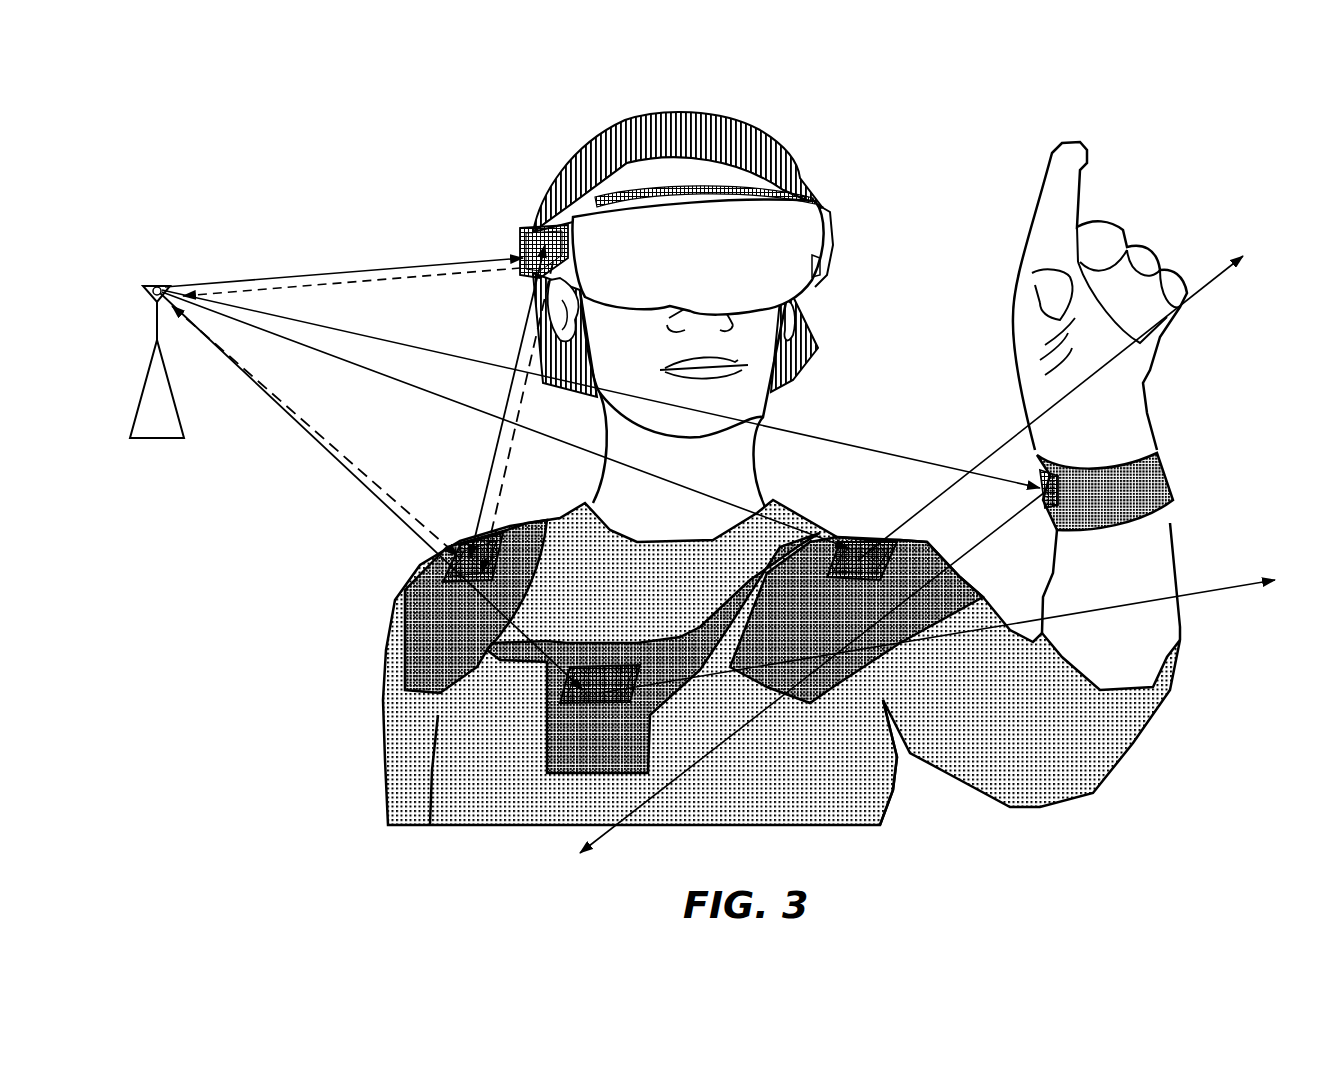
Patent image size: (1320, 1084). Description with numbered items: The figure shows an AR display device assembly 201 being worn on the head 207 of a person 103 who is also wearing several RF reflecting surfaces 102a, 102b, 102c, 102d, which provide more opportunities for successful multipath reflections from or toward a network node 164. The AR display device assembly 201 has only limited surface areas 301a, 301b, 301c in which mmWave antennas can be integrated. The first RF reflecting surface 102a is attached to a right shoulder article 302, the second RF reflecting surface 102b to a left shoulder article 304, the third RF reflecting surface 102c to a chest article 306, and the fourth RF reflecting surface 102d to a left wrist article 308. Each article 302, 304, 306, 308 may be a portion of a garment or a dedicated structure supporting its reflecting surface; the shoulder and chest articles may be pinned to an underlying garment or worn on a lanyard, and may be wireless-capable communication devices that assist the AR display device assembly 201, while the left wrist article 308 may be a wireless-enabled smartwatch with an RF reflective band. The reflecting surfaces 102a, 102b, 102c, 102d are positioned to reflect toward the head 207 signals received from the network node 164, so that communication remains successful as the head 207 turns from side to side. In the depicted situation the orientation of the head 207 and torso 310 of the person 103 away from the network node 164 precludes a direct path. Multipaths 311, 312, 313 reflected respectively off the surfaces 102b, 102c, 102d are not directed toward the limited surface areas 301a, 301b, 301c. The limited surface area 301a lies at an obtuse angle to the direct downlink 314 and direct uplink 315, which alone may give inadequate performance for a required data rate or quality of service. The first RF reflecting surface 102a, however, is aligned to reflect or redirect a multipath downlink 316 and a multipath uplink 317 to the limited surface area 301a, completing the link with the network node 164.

The first RF reflecting surface 102a is at (440, 580).
The second RF reflecting surface 102b is at (853, 540).
The third RF reflecting surface 102c is at (598, 703).
The fourth RF reflecting surface 102d is at (1048, 505).
The person 103 is at (388, 765).
The network node 164 is at (185, 440).
The AR display device assembly 201 is at (852, 222).
The head 207 is at (780, 167).
The limited surface area 301a is at (527, 245).
The limited surface area 301b is at (735, 190).
The limited surface area 301c is at (833, 245).
The right shoulder article 302 is at (445, 640).
The left shoulder article 304 is at (937, 595).
The chest article 306 is at (560, 720).
The left wrist article 308 is at (1125, 485).
The torso 310 is at (857, 802).
The multipath 311 is at (553, 662).
The multipath 312 is at (773, 527).
The multipath 313 is at (893, 440).
The direct downlink 314 is at (285, 275).
The direct uplink 315 is at (508, 275).
The multipath downlink 316 is at (403, 507).
The multipath uplink 317 is at (338, 460).